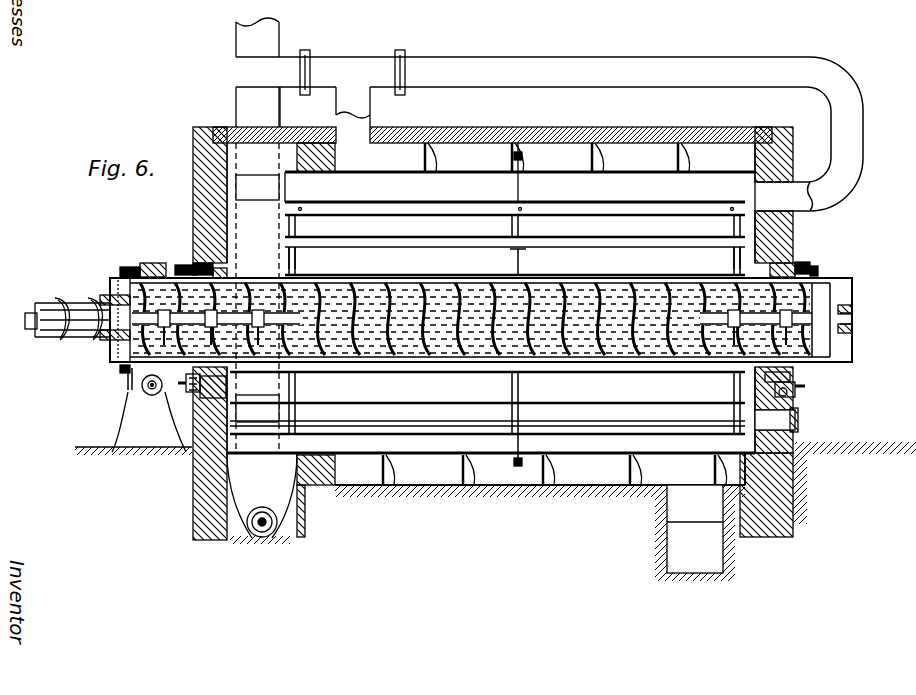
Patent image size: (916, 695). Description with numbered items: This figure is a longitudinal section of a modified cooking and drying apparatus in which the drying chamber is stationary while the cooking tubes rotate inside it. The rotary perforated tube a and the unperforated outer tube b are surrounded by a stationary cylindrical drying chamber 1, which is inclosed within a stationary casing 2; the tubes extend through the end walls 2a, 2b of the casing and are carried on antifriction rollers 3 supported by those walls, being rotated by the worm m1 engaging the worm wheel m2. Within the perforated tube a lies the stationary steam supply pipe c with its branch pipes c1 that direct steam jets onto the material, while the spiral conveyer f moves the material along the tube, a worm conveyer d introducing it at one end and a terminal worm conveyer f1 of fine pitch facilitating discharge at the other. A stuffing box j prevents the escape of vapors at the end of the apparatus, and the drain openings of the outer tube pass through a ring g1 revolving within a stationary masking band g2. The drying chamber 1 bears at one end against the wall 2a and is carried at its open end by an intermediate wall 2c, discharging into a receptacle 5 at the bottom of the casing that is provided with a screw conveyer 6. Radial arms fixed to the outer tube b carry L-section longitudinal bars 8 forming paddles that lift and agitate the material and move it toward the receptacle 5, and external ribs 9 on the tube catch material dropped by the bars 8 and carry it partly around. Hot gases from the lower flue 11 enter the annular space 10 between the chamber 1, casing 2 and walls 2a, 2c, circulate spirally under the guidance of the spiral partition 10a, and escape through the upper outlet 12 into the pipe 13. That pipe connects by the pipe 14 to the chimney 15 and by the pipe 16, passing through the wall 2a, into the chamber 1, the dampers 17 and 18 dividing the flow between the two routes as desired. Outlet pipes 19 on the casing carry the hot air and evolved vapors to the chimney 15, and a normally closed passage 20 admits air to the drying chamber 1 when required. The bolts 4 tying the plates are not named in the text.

The drying chamber 1 is at (703, 178).
The casing 2 is at (695, 128).
The end wall 2a is at (790, 152).
The end wall 2b is at (195, 197).
The intermediate wall 2c is at (338, 165).
The antifriction rollers 3 is at (200, 388).
The tie bolt 4 is at (306, 228).
The receptacle 5 is at (495, 493).
The screw conveyer 6 is at (256, 526).
The longitudinal bars 8 is at (386, 207).
The longitudinal ribs 9 is at (598, 384).
The annular space 10 is at (491, 475).
The spiral partition 10a is at (520, 157).
The lower flue 11 is at (695, 533).
The upper outlet 12 is at (355, 125).
The pipe 13 is at (348, 66).
The pipe 14 is at (248, 73).
The chimney 15 is at (246, 38).
The pipe 16 is at (848, 110).
The damper 17 is at (308, 52).
The damper 18 is at (405, 52).
The outlet pipes 19 is at (248, 103).
The normally closed passage 20 is at (798, 420).
The perforated tube a is at (640, 276).
The outer tube b is at (598, 274).
The steam supply pipe c is at (30, 330).
The branch pipes c1 is at (302, 327).
The worm conveyer d is at (60, 300).
The spiral conveyer f is at (475, 319).
The terminal worm conveyer f1 is at (855, 290).
The ring g1 is at (150, 264).
The masking band g2 is at (132, 266).
The stuffing box j is at (186, 264).
The worm m1 is at (152, 396).
The worm wheel m2 is at (168, 262).